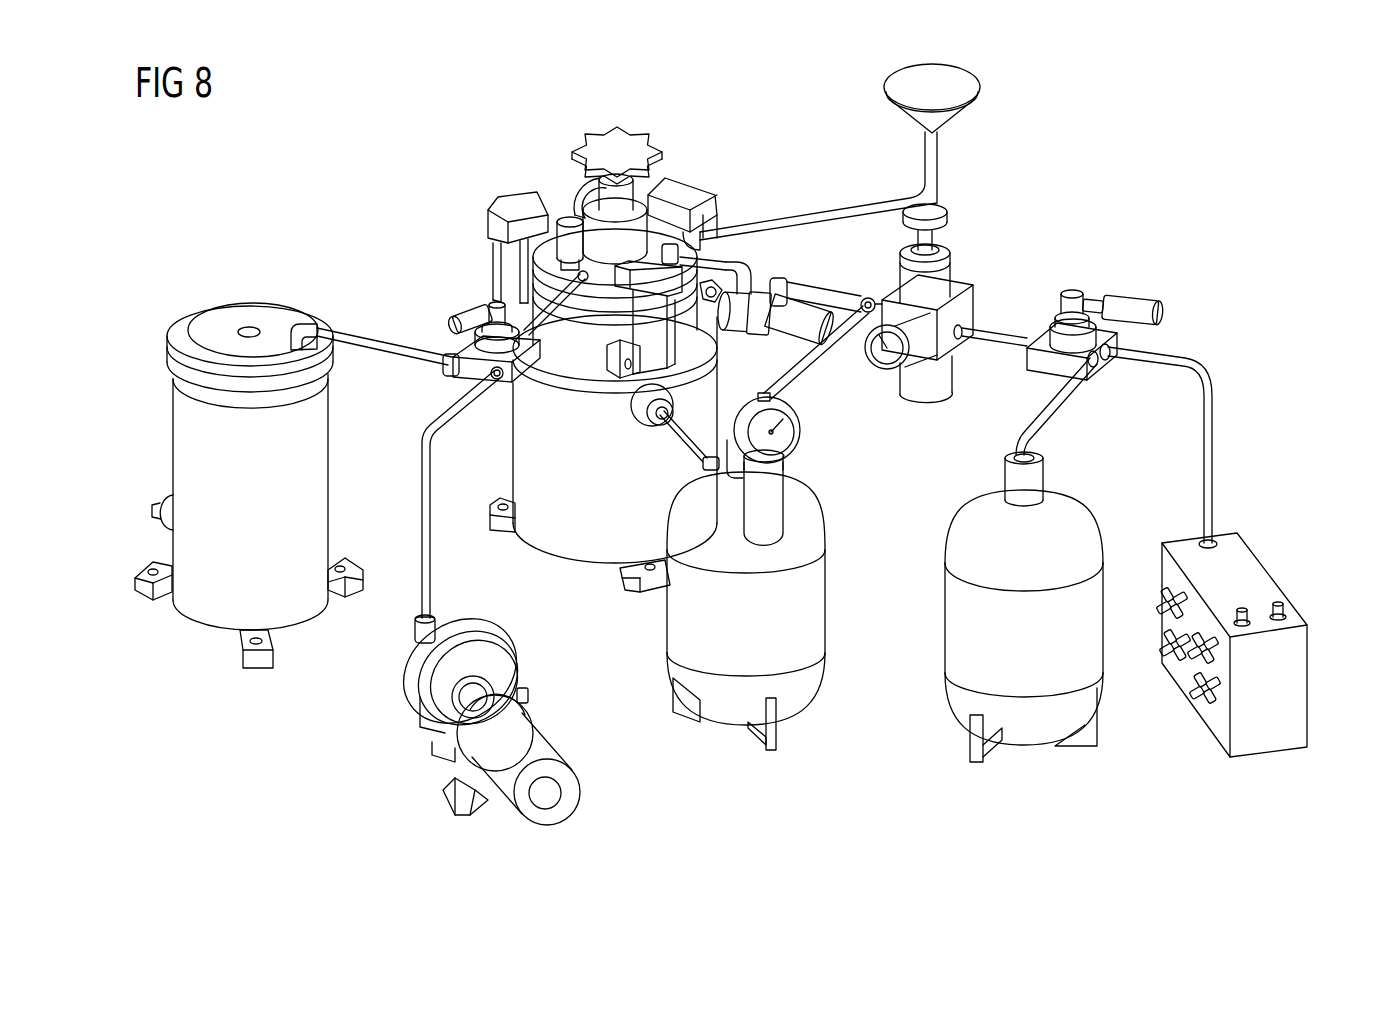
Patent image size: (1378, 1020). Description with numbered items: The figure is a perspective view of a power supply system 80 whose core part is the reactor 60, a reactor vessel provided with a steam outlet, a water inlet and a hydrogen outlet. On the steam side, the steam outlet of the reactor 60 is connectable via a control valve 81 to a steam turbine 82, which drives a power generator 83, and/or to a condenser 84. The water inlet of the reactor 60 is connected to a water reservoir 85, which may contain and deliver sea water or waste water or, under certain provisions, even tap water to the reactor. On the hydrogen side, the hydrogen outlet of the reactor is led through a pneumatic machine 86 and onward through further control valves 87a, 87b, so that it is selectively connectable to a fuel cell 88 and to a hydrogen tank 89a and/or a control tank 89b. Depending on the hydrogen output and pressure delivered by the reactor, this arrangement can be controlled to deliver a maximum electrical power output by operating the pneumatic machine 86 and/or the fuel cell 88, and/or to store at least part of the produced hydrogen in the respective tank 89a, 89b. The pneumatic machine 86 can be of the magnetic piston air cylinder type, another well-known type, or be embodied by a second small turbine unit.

The power supply system 80 is at (1172, 100).
The reactor 60 is at (572, 237).
The control valve 81 is at (483, 313).
The steam turbine 82 is at (412, 672).
The power generator 83 is at (553, 793).
The condenser 84 is at (322, 483).
The water reservoir 85 is at (967, 90).
The pneumatic machine 86 is at (757, 296).
The control valve 87a is at (940, 277).
The control valve 87b is at (1063, 342).
The fuel cell 88 is at (1245, 565).
The hydrogen tank 89a is at (950, 628).
The control tank 89b is at (815, 582).